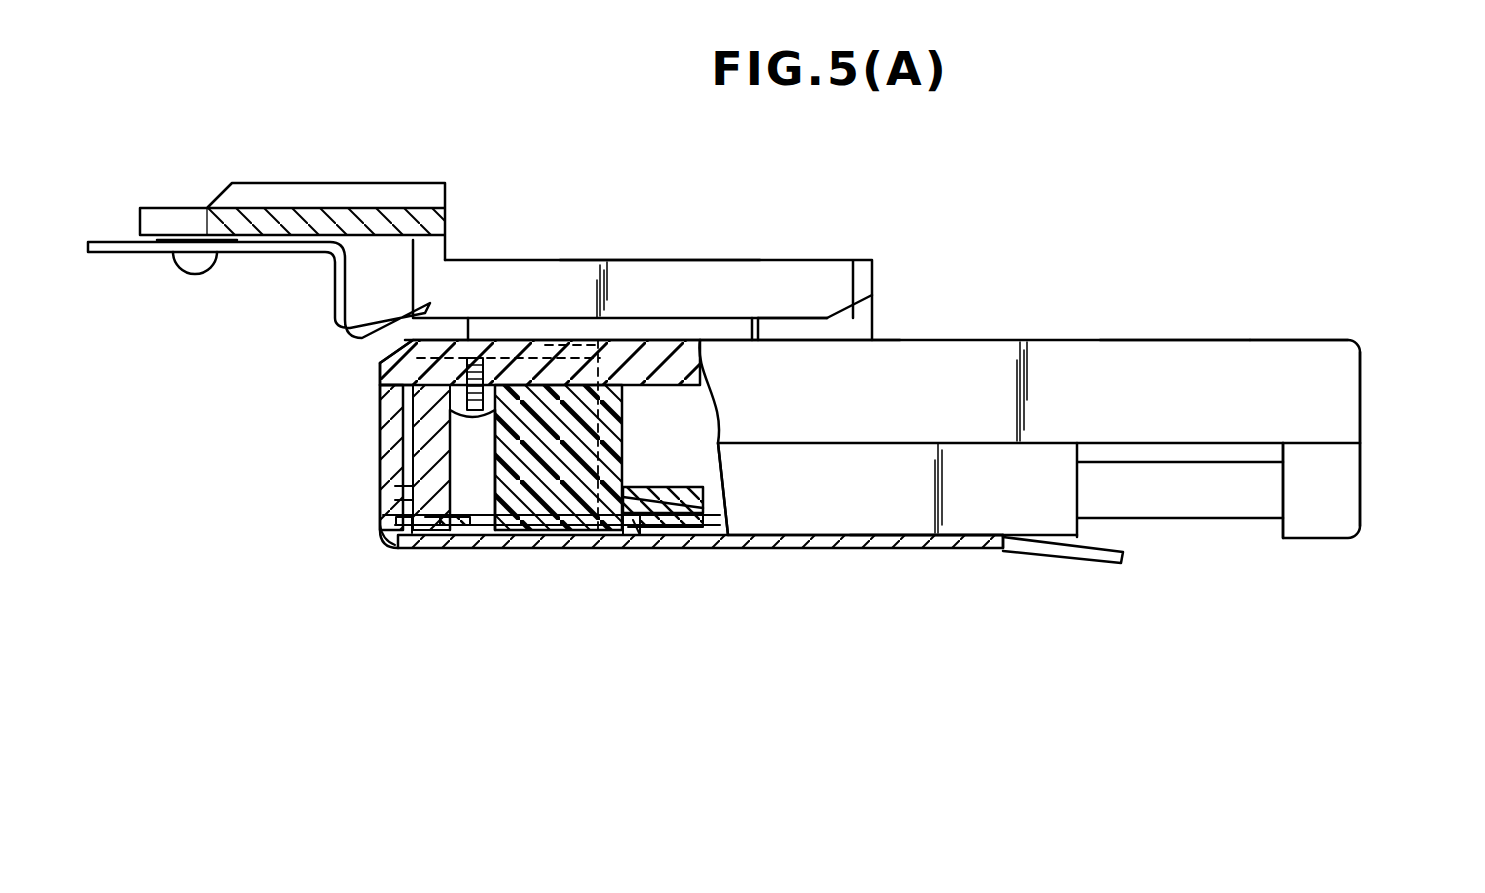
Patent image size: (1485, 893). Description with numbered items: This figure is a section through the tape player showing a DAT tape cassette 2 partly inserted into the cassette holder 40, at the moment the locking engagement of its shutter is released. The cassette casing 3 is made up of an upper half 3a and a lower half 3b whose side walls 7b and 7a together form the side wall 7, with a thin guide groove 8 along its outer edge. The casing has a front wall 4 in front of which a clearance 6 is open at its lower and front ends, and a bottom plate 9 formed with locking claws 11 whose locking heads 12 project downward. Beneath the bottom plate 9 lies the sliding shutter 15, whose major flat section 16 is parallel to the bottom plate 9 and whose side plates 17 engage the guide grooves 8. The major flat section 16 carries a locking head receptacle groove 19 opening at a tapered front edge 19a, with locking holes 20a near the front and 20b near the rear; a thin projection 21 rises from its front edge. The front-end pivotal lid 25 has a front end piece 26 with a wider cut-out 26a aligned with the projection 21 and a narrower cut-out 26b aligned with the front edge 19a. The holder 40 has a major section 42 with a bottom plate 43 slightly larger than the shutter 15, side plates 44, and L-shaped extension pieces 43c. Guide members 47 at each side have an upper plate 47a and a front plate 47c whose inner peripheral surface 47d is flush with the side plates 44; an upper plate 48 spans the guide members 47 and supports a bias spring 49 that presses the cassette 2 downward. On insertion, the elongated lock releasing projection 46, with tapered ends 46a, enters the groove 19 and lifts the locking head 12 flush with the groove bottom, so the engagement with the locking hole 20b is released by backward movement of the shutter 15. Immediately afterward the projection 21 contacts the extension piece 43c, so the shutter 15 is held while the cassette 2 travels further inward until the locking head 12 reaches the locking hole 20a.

The tape cassette 2 is at (1250, 343).
The cassette casing 3 is at (1438, 380).
The upper half 3a is at (1355, 390).
The lower half 3b is at (1352, 487).
The front wall 4 is at (397, 453).
The clearance 6 is at (505, 365).
The side wall 7 is at (1072, 344).
The side wall of lower half 7a is at (1244, 520).
The side wall of upper half 7b is at (1177, 344).
The guide groove 8 is at (1178, 448).
The bottom plate 9 is at (628, 520).
The locking claw 11 is at (702, 487).
The locking head 12 is at (640, 532).
The sliding shutter 15 is at (1078, 493).
The major flat section 16 is at (735, 522).
The side plate 17 is at (907, 535).
The locking head receptacle groove 19 is at (410, 530).
The front edge 19a is at (414, 534).
The locking hole 20a is at (437, 530).
The locking hole 20b is at (636, 522).
The thin projection 21 is at (392, 500).
The pivotal lid 25 is at (380, 383).
The front end piece 26 is at (387, 427).
The wider cut-out 26a is at (395, 490).
The narrower cut-out 26b is at (372, 530).
The cassette holder 40 is at (806, 262).
The major section 42 is at (978, 549).
The bottom plate 43 is at (848, 547).
The extension piece 43c is at (383, 515).
The side plate 44 is at (708, 330).
The lock releasing projection 46 is at (588, 470).
The tapered end 46a is at (470, 528).
The guide member 47 is at (876, 300).
The upper plate of guide member 47a is at (651, 261).
The front plate 47c is at (864, 331).
The inner peripheral surface 47d is at (796, 341).
The upper plate 48 is at (447, 228).
The bias spring 49 is at (338, 317).